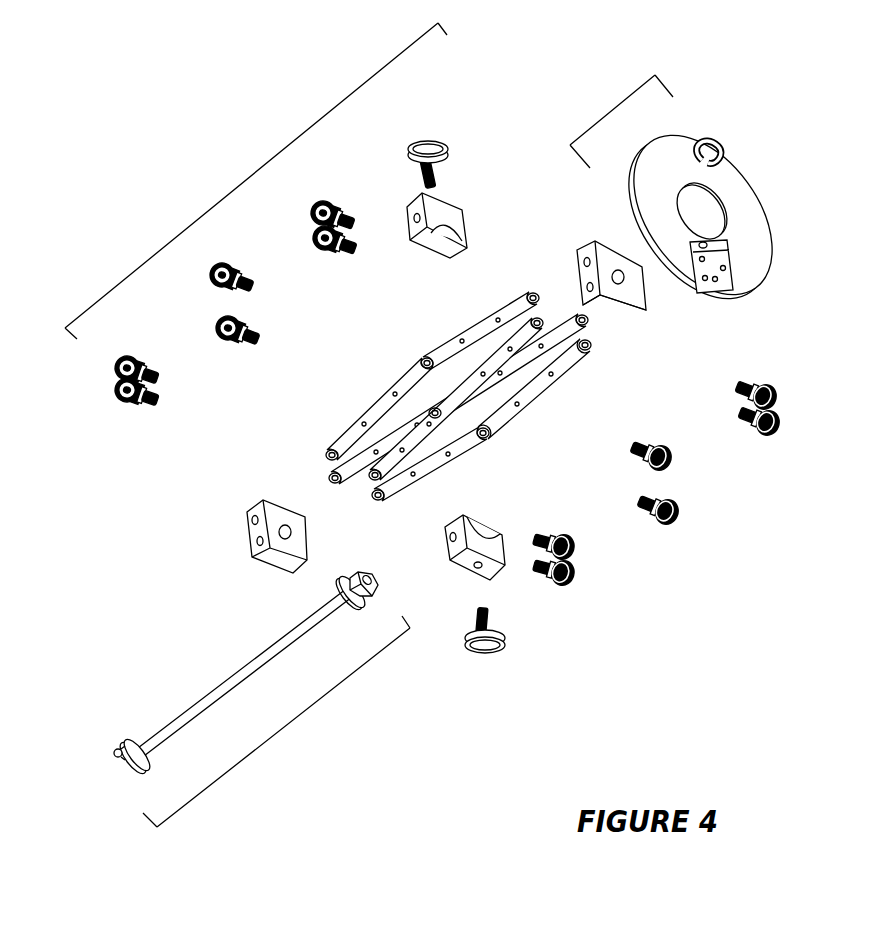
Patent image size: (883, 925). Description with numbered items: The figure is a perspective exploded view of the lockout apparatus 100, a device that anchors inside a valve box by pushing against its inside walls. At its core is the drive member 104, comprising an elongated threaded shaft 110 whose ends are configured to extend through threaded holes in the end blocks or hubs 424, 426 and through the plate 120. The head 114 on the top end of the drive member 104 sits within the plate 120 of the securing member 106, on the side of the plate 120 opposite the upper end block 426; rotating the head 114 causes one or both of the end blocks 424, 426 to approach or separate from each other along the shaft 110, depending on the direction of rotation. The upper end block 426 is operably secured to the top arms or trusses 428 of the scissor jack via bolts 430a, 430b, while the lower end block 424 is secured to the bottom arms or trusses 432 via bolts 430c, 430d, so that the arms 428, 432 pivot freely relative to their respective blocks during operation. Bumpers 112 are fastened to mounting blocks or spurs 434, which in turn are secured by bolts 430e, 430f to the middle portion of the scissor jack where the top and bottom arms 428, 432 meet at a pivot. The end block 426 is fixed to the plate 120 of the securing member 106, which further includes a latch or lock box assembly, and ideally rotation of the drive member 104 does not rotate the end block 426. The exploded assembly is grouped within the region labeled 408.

The lockout apparatus 100 is at (797, 115).
The drive member 104 is at (285, 727).
The securing member 106 is at (612, 110).
The threaded shaft 110 is at (247, 658).
The bumpers 112 is at (427, 140).
The head 114 is at (356, 572).
The plate 120 is at (773, 263).
The linkage assembly 408 is at (255, 177).
The end block 424 is at (253, 503).
The end block 426 is at (608, 250).
The top arms 428 is at (607, 358).
The bolts 430a is at (323, 202).
The bolts 430b is at (762, 387).
The bolts 430c is at (560, 535).
The bolts 430d is at (145, 407).
The bolts 430e is at (680, 530).
The bolts 430f is at (207, 348).
The bottom arms 432 is at (417, 340).
The mounting blocks 434 is at (450, 202).